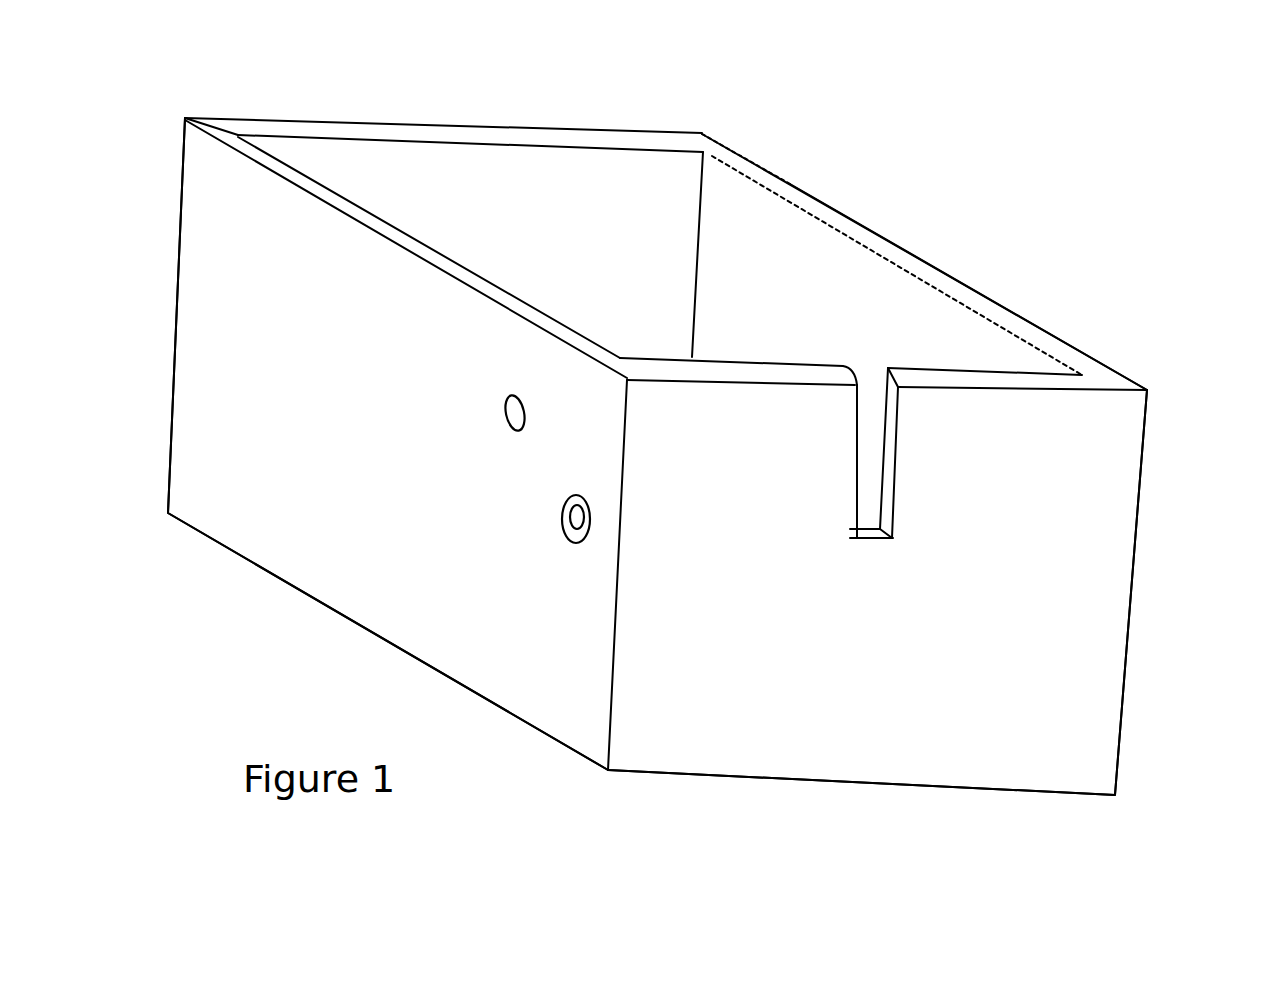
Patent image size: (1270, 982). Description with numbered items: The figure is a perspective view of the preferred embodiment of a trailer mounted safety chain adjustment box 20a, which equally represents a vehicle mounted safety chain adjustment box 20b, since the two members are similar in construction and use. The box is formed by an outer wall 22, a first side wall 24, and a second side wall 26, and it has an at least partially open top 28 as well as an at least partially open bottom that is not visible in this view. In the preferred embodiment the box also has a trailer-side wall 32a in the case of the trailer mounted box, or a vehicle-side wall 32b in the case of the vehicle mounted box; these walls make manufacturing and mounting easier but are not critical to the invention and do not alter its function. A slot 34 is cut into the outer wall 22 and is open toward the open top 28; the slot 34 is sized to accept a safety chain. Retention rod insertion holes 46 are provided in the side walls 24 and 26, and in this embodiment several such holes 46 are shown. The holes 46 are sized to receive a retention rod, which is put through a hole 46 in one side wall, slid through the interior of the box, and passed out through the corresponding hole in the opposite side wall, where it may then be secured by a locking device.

The trailer mounted safety chain adjustment box 20a is at (950, 237).
The vehicle mounted safety chain adjustment box 20b is at (950, 262).
The outer wall 22 is at (1068, 653).
The first side wall 24 is at (247, 377).
The second side wall 26 is at (750, 170).
The at least partially open top 28 is at (765, 215).
The trailer-side wall 32a is at (496, 97).
The vehicle-side wall 32b is at (470, 96).
The slot 34 is at (873, 447).
The retention rod insertion holes 46 is at (527, 432).